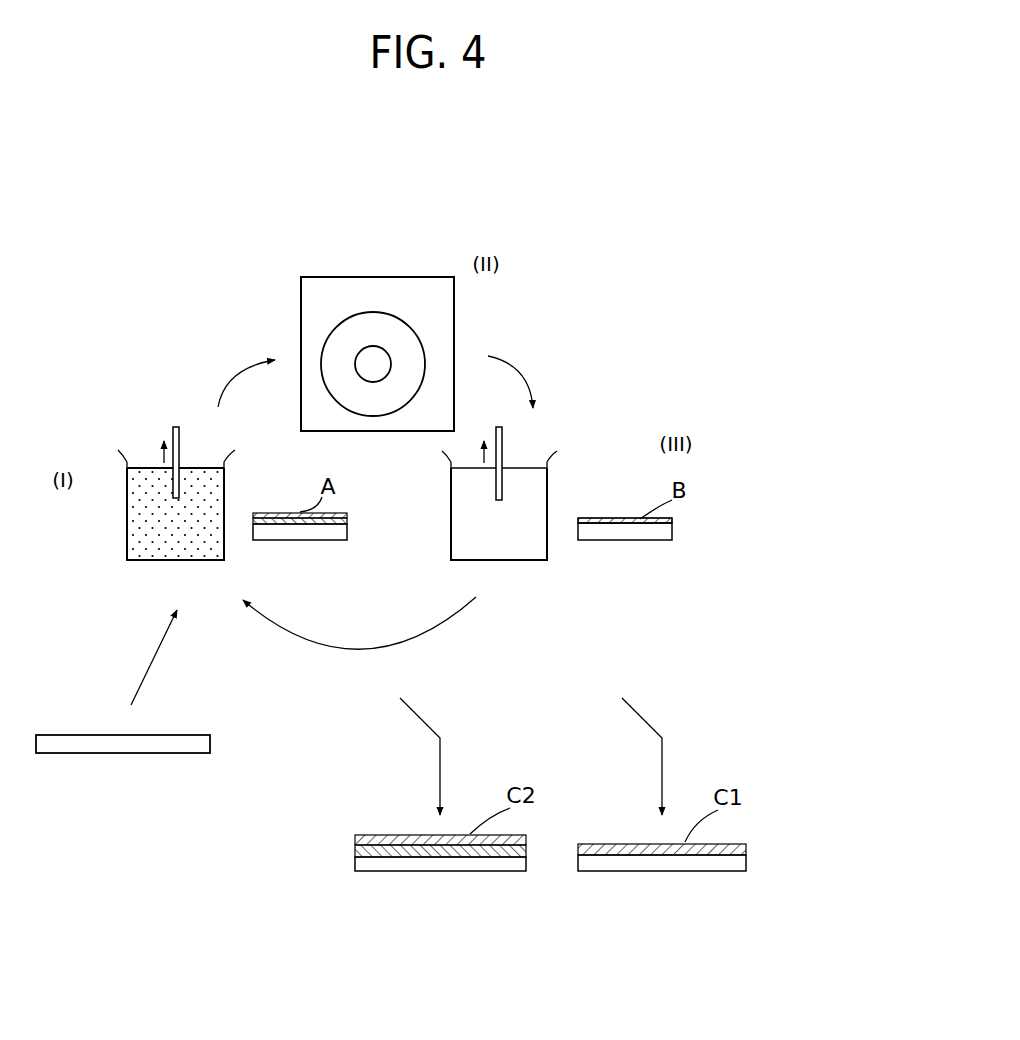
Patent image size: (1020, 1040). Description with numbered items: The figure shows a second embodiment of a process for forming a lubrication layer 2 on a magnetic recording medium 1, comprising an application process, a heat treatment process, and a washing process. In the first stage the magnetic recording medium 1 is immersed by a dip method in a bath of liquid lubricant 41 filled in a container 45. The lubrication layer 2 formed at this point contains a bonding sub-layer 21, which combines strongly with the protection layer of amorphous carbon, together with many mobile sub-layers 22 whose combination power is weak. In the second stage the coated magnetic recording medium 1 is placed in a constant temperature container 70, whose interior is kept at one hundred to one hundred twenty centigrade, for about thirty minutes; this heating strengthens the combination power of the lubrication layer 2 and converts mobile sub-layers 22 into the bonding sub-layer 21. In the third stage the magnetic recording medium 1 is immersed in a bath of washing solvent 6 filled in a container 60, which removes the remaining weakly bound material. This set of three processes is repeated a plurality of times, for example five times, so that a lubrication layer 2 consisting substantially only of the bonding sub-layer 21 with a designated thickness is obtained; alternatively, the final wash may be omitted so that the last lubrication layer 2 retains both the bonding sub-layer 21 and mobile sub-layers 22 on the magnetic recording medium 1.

The magnetic recording medium 1 is at (179, 440).
The lubrication layer 2 is at (683, 513).
The solvent 6 is at (535, 492).
The bonding sub-layer 21 is at (350, 521).
The mobile sub-layers 22 is at (350, 514).
The liquid lubricant 41 is at (218, 497).
The container 45 is at (127, 545).
The container 60 is at (549, 553).
The constant temperature container 70 is at (455, 335).